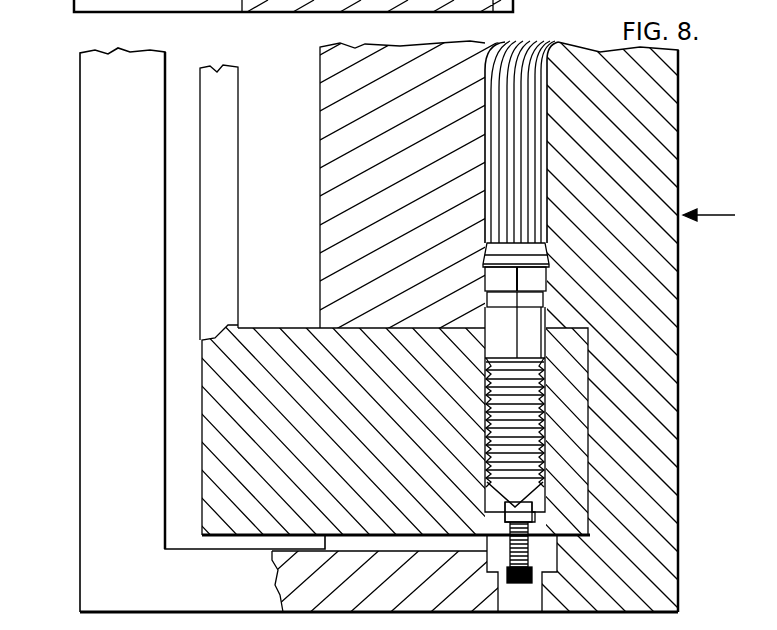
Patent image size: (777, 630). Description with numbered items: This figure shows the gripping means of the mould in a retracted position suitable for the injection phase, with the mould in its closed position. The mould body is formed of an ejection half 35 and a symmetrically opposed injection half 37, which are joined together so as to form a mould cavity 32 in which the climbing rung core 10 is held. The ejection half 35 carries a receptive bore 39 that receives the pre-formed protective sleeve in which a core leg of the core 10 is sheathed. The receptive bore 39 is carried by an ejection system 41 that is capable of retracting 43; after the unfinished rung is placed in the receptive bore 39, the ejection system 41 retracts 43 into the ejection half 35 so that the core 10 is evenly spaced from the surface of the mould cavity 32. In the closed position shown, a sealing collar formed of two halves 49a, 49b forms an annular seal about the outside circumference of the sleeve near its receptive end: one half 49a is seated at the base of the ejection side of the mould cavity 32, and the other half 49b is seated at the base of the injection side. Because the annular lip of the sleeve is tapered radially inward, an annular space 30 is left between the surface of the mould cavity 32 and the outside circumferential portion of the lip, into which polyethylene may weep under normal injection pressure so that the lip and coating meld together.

The climbing rung core 10 is at (530, 38).
The mould cavity 32 is at (504, 41).
The annular space 30 is at (548, 245).
The sealing collar half 49a is at (485, 300).
The sealing collar half 49b is at (547, 298).
The ejection system 41 is at (588, 445).
The receptive bore 39 is at (545, 493).
The injection half 37 is at (679, 390).
The ejection half 35 is at (80, 309).
The retracting 43 is at (240, 217).